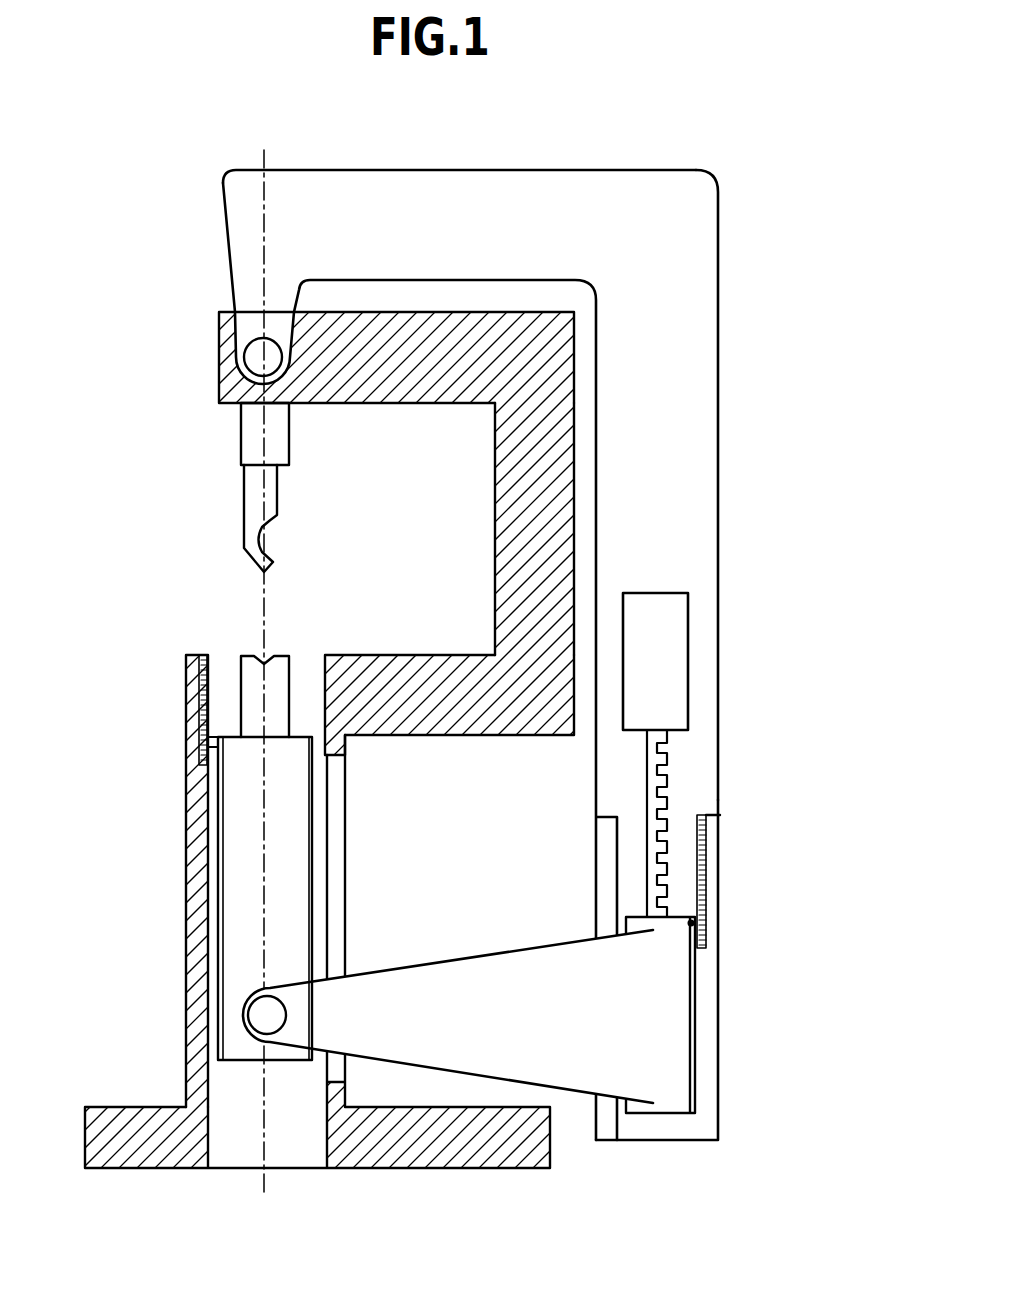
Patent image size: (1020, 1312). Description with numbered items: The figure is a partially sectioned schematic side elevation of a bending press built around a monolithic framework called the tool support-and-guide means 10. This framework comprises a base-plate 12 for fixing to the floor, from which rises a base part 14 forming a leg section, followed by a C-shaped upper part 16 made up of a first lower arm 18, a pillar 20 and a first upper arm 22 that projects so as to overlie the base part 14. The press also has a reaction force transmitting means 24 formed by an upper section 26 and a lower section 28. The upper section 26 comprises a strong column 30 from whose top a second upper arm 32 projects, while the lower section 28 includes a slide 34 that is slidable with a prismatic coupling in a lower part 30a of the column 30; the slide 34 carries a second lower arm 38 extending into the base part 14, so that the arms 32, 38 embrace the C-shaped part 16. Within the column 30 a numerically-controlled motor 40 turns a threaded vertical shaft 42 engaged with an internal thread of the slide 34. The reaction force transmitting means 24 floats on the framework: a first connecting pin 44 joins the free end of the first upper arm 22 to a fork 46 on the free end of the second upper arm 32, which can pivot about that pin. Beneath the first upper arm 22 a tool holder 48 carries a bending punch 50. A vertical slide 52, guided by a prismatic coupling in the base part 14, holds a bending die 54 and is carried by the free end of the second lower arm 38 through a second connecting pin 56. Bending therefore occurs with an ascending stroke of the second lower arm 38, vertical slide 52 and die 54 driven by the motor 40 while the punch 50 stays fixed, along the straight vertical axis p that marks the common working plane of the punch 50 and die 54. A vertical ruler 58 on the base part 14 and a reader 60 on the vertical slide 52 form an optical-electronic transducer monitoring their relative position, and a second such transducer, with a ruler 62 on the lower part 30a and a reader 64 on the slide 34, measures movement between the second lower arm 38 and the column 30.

The tool support-and-guide means 10 is at (174, 663).
The base-plate 12 is at (143, 1162).
The base part 14 is at (196, 920).
The C-shaped upper part 16 is at (516, 554).
The first lower arm 18 is at (436, 745).
The pillar 20 is at (560, 415).
The first upper arm 22 is at (462, 318).
The reaction force transmitting means 24 is at (498, 607).
The upper section 26 is at (531, 625).
The lower section 28 is at (549, 853).
The column 30 is at (706, 655).
The lower part of the column 30a is at (706, 1002).
The second upper arm 32 is at (338, 180).
The slide 34 is at (672, 1050).
The second lower arm 38 is at (519, 1041).
The numerically-controlled motor 40 is at (680, 658).
The threaded vertical shaft 42 is at (665, 773).
The first connecting pin 44 is at (248, 356).
The fork 46 is at (222, 244).
The tool holder 48 is at (245, 430).
The bending punch 50 is at (250, 498).
The vertical slide 52 is at (228, 845).
The bending die 54 is at (252, 664).
The second connecting pin 56 is at (255, 1016).
The vertical ruler 58 is at (198, 708).
The reader 60 is at (211, 748).
The ruler 62 is at (700, 853).
The reader 64 is at (693, 924).
The axis P p is at (262, 594).